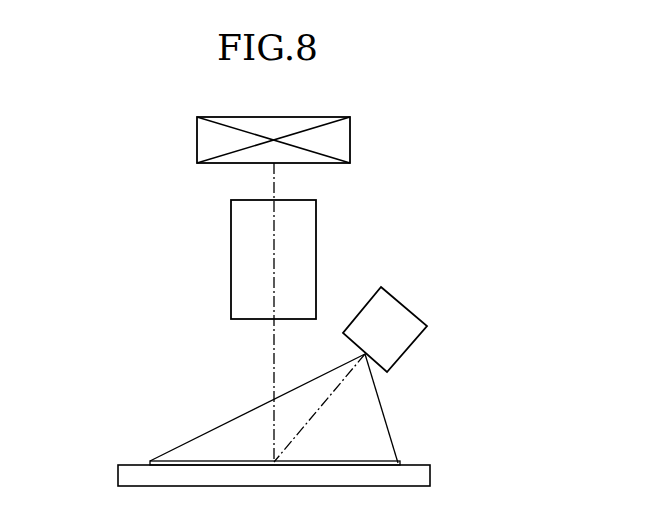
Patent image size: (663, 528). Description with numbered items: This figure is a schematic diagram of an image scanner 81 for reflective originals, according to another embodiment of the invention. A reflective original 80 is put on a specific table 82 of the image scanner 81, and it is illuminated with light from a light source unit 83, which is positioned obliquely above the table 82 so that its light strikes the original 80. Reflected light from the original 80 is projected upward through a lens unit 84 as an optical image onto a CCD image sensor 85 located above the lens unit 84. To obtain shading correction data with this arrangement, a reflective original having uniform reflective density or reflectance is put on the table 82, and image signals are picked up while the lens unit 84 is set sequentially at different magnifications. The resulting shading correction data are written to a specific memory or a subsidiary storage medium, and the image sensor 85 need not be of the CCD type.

The reflective original 80 is at (358, 463).
The image scanner 81 is at (136, 182).
The table 82 is at (420, 464).
The light source unit 83 is at (406, 321).
The lens unit 84 is at (226, 256).
The CCD image sensor 85 is at (350, 142).